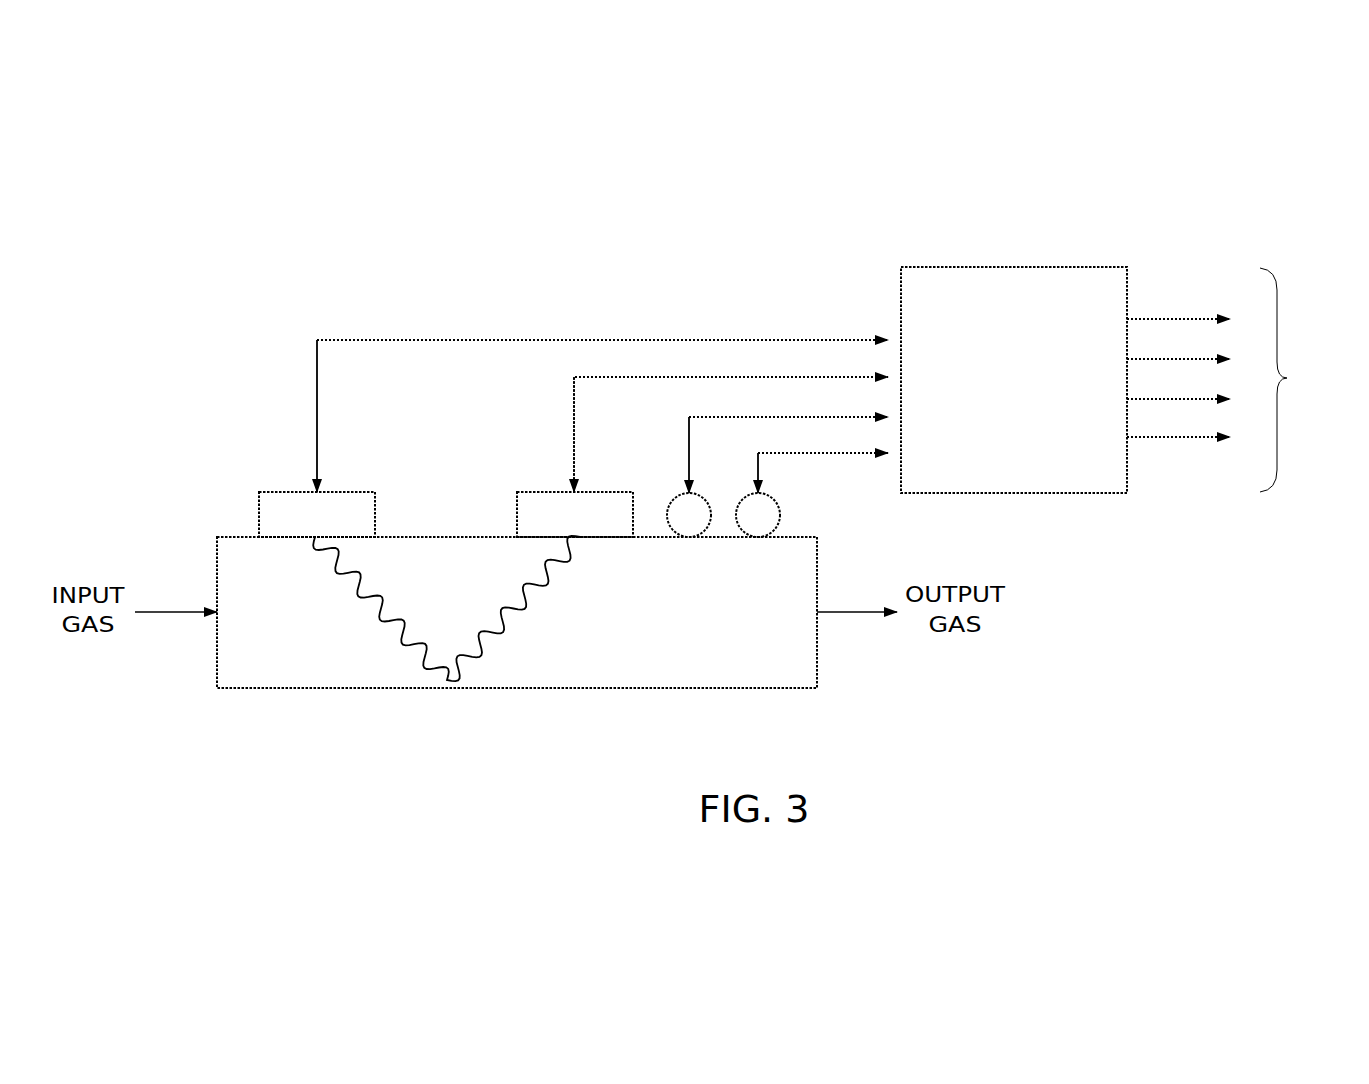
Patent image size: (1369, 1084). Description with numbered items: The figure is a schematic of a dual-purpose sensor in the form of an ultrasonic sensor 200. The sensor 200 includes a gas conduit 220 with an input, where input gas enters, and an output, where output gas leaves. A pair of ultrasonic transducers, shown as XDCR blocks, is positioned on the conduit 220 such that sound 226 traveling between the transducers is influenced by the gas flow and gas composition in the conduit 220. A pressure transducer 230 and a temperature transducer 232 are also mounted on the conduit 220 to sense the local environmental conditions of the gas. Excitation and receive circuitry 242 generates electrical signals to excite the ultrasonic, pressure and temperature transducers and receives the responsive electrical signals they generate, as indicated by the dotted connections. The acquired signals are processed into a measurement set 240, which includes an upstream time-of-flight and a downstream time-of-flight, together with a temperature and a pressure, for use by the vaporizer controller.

The ultrasonic sensor 200 is at (422, 199).
The gas conduit 220 is at (587, 690).
The sound 226 is at (378, 615).
The pressure transducer 230 is at (667, 498).
The temperature transducer 232 is at (740, 498).
The measurement set 240 is at (1287, 378).
The excitation and receive circuitry 242 is at (1013, 265).